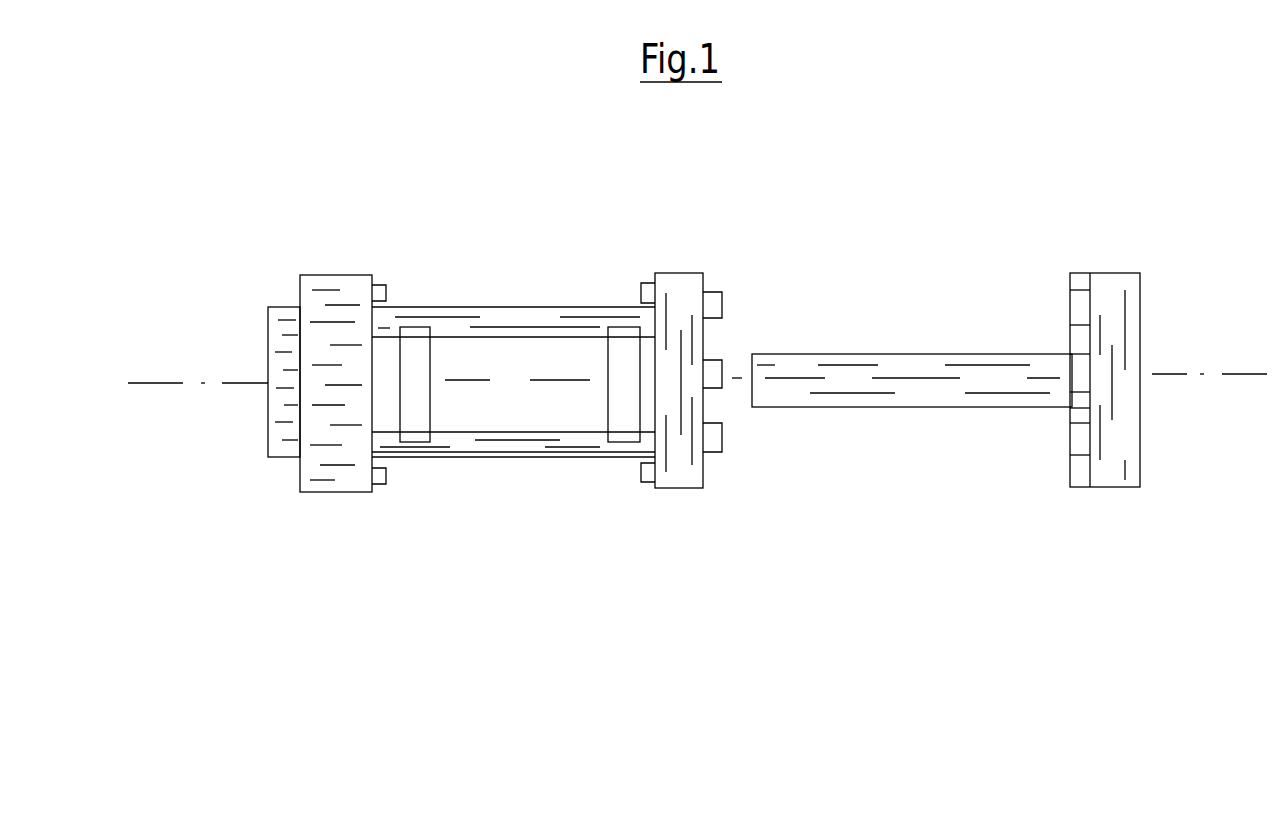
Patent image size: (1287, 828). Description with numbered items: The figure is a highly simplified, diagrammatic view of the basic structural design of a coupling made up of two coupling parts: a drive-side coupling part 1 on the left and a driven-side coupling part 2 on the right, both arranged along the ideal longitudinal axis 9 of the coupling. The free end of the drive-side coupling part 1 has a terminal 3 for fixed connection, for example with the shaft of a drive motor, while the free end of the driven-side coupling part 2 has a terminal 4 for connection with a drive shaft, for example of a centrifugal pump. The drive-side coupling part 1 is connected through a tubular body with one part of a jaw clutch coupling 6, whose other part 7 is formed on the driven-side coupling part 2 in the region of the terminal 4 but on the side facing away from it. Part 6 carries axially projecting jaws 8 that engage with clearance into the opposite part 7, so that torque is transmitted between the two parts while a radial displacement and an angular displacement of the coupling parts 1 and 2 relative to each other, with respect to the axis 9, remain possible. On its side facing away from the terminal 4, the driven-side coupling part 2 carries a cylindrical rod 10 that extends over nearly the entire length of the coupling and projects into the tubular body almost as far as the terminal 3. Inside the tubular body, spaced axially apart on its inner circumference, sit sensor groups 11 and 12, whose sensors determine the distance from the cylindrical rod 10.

The drive-side coupling part 1 is at (331, 256).
The driven-side coupling part 2 is at (1134, 314).
The terminal 3 is at (280, 437).
The terminal 4 is at (1123, 442).
The jaw clutch coupling part 6 is at (687, 288).
The jaw clutch coupling part 7 is at (1107, 292).
The jaws 8 is at (712, 380).
The longitudinal axis 9 is at (162, 383).
The cylindrical rod 10 is at (798, 373).
The sensor group 11 is at (420, 427).
The sensor group 12 is at (627, 427).